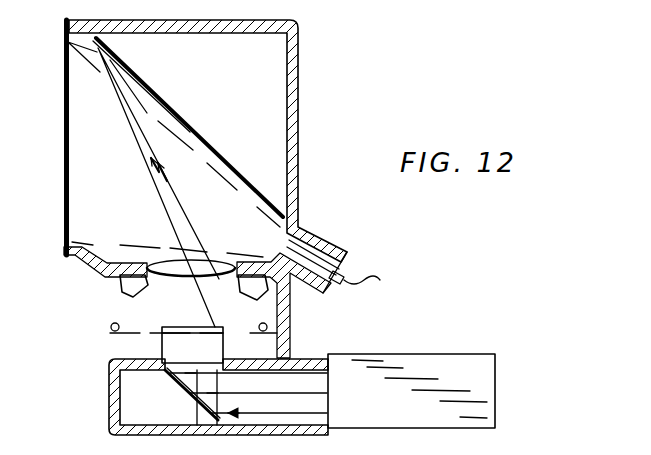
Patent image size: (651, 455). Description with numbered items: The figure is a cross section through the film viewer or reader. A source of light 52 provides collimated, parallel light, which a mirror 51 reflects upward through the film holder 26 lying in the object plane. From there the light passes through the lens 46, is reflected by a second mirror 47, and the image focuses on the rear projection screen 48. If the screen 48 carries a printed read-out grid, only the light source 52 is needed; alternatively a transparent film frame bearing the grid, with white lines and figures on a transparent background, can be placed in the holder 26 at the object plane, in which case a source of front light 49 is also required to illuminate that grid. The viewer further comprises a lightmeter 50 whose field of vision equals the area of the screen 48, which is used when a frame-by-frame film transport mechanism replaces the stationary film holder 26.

The rear projection screen 48 is at (67, 197).
The mirror 47 is at (192, 128).
The lightmeter 50 is at (346, 263).
The lens 46 is at (117, 298).
The source of front light 49 is at (117, 280).
The film holder 26 is at (160, 352).
The mirror 51 is at (177, 398).
The source of light 52 is at (477, 360).